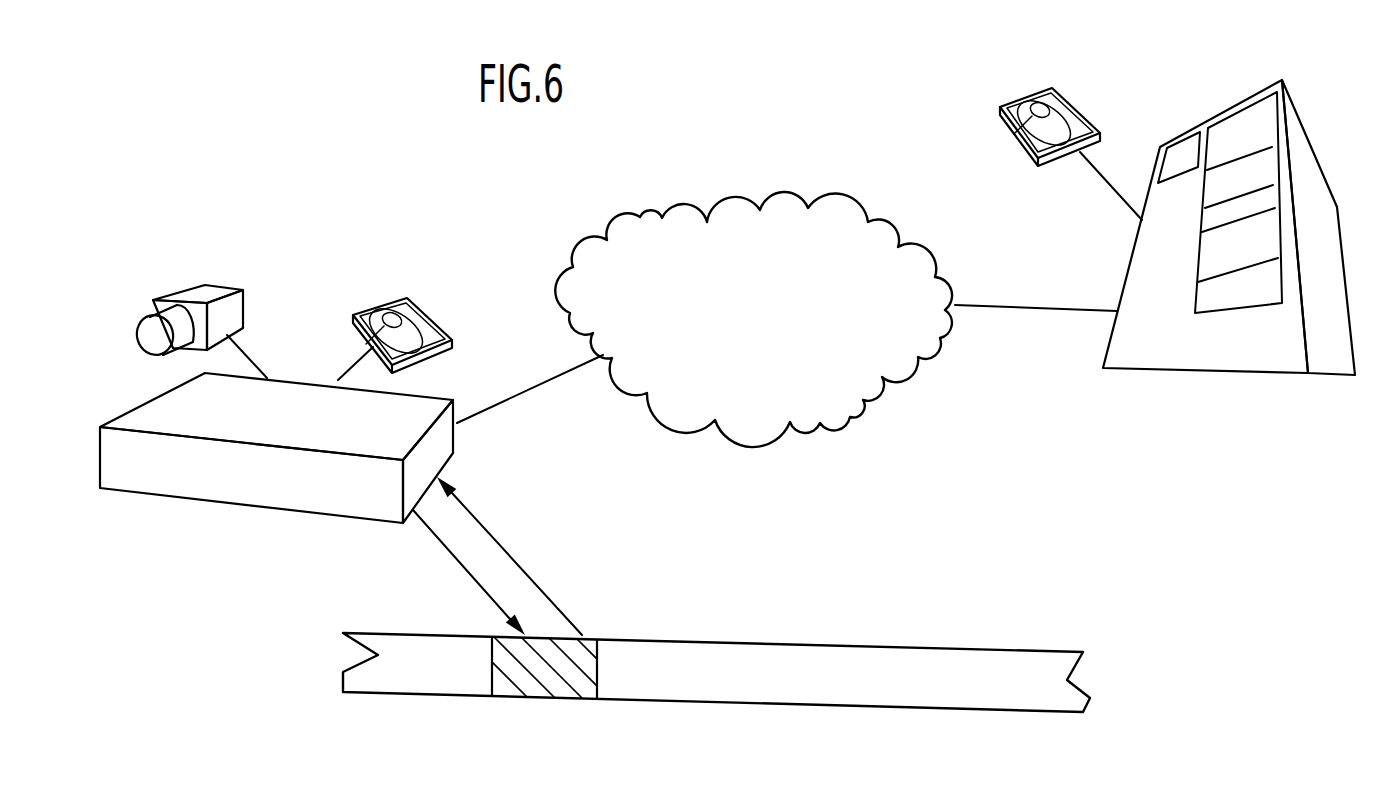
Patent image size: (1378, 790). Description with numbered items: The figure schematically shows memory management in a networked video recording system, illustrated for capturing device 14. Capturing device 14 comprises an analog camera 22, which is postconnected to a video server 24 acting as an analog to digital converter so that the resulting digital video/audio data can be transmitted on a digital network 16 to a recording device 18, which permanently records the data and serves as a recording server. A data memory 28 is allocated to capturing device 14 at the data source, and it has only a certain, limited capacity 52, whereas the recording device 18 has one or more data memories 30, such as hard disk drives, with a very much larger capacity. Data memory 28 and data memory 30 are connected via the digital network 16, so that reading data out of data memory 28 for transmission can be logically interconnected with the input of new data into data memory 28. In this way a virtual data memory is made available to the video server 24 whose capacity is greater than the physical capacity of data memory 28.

The capturing device 14 is at (363, 235).
The digital network 16 is at (733, 213).
The recording device 18 is at (1163, 398).
The analog camera 22 is at (213, 292).
The video server 24 is at (300, 500).
The data memory 28 is at (425, 333).
The data memory 30 is at (1075, 123).
The capacity 52 is at (565, 687).